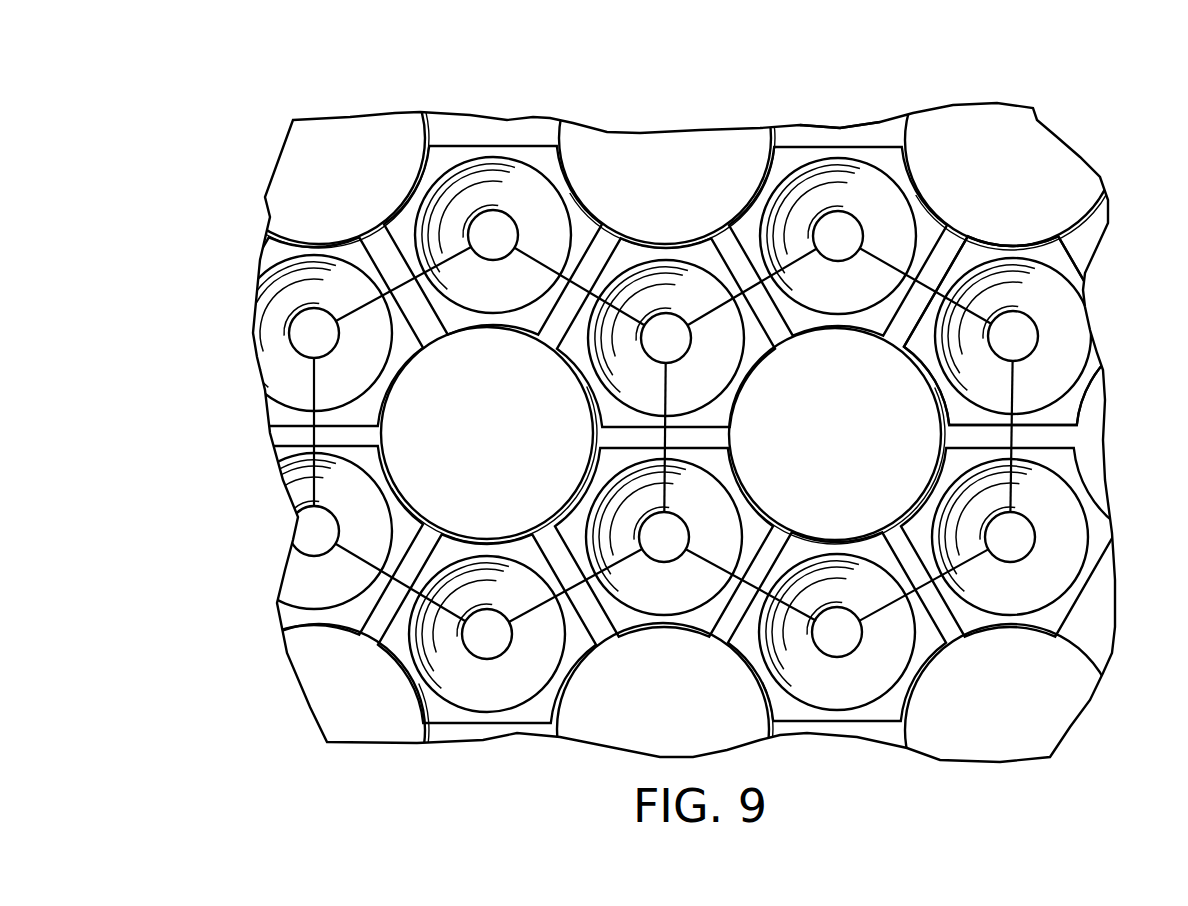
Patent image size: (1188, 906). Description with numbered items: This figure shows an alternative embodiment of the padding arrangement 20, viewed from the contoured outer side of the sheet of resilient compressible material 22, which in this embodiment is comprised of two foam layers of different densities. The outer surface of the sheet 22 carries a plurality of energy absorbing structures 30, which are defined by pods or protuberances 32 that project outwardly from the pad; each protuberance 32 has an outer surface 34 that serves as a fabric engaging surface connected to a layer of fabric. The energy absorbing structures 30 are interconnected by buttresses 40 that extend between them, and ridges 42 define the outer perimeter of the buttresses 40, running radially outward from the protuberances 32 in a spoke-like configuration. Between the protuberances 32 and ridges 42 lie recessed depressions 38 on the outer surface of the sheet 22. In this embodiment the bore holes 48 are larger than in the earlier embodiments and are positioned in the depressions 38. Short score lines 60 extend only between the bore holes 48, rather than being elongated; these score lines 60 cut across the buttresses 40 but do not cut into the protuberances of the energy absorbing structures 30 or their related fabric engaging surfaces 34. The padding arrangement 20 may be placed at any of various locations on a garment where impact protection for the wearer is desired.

The padding arrangement 20 is at (262, 127).
The sheet of resilient compressible material 22 is at (878, 130).
The energy absorbing structures 30 is at (985, 336).
The protuberances 32 is at (908, 447).
The outer surface 34 is at (1010, 335).
The depressions 38 is at (868, 230).
The buttresses 40 is at (333, 403).
The ridges 42 is at (300, 433).
The bore holes 48 is at (500, 236).
The score lines 60 is at (545, 262).